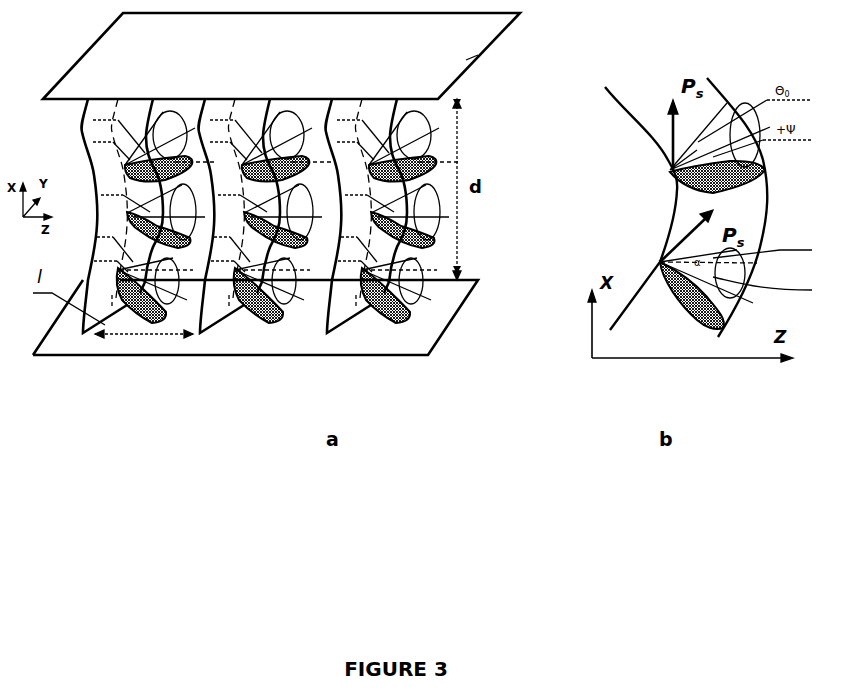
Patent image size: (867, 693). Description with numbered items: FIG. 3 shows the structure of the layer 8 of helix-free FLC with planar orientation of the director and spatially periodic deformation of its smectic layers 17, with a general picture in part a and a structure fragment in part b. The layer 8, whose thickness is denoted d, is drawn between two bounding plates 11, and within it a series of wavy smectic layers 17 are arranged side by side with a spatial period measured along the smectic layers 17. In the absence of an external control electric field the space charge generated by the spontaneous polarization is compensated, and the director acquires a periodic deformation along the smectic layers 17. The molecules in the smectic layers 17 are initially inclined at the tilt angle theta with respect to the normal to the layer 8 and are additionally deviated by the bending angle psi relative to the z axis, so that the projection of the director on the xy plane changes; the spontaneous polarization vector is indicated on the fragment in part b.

The layer of helix-free FLC 8 is at (82, 155).
The plate 11 is at (398, 100).
The smectic layers 17 is at (712, 83).